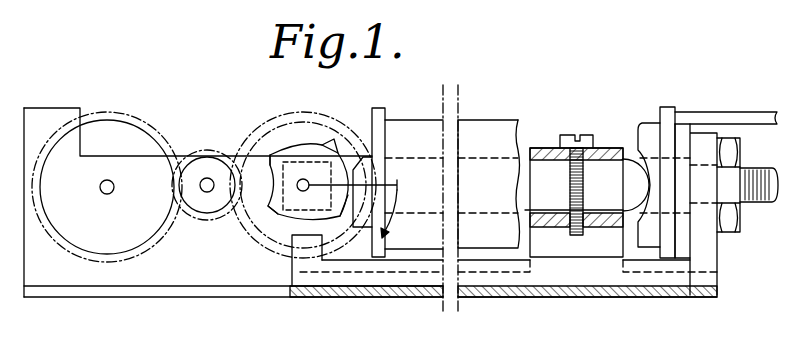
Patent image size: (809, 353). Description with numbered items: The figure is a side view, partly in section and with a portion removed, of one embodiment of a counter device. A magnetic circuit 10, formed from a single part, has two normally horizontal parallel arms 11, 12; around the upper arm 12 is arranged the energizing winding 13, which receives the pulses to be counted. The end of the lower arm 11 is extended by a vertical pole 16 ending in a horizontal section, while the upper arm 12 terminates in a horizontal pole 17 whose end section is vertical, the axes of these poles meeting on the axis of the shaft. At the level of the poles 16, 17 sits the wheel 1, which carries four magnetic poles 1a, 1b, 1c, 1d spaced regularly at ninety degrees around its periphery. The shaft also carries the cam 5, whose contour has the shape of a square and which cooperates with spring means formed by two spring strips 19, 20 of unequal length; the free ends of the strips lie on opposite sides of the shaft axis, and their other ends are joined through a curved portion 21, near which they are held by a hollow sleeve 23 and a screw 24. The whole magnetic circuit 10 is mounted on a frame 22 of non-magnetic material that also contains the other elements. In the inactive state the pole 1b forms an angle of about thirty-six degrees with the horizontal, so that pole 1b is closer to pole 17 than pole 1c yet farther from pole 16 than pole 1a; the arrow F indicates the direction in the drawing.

The wheel 1 is at (305, 207).
The magnetic pole 1a is at (286, 217).
The magnetic pole 1b is at (306, 188).
The magnetic pole 1c is at (310, 172).
The magnetic pole 1d is at (275, 162).
The cam 5 is at (268, 206).
The magnetic circuit 10 is at (570, 268).
The arm 11 is at (598, 271).
The arm 12 is at (500, 172).
The energizing winding 13 is at (497, 135).
The vertical pole 16 is at (307, 249).
The horizontal pole 17 is at (361, 177).
The spring strip 19 is at (574, 202).
The spring strip 20 is at (553, 214).
The curved portion 21 is at (639, 165).
The frame 22 is at (330, 289).
The hollow sleeve 23 is at (596, 158).
The screw 24 is at (577, 135).
The direction of rotation F is at (262, 91).